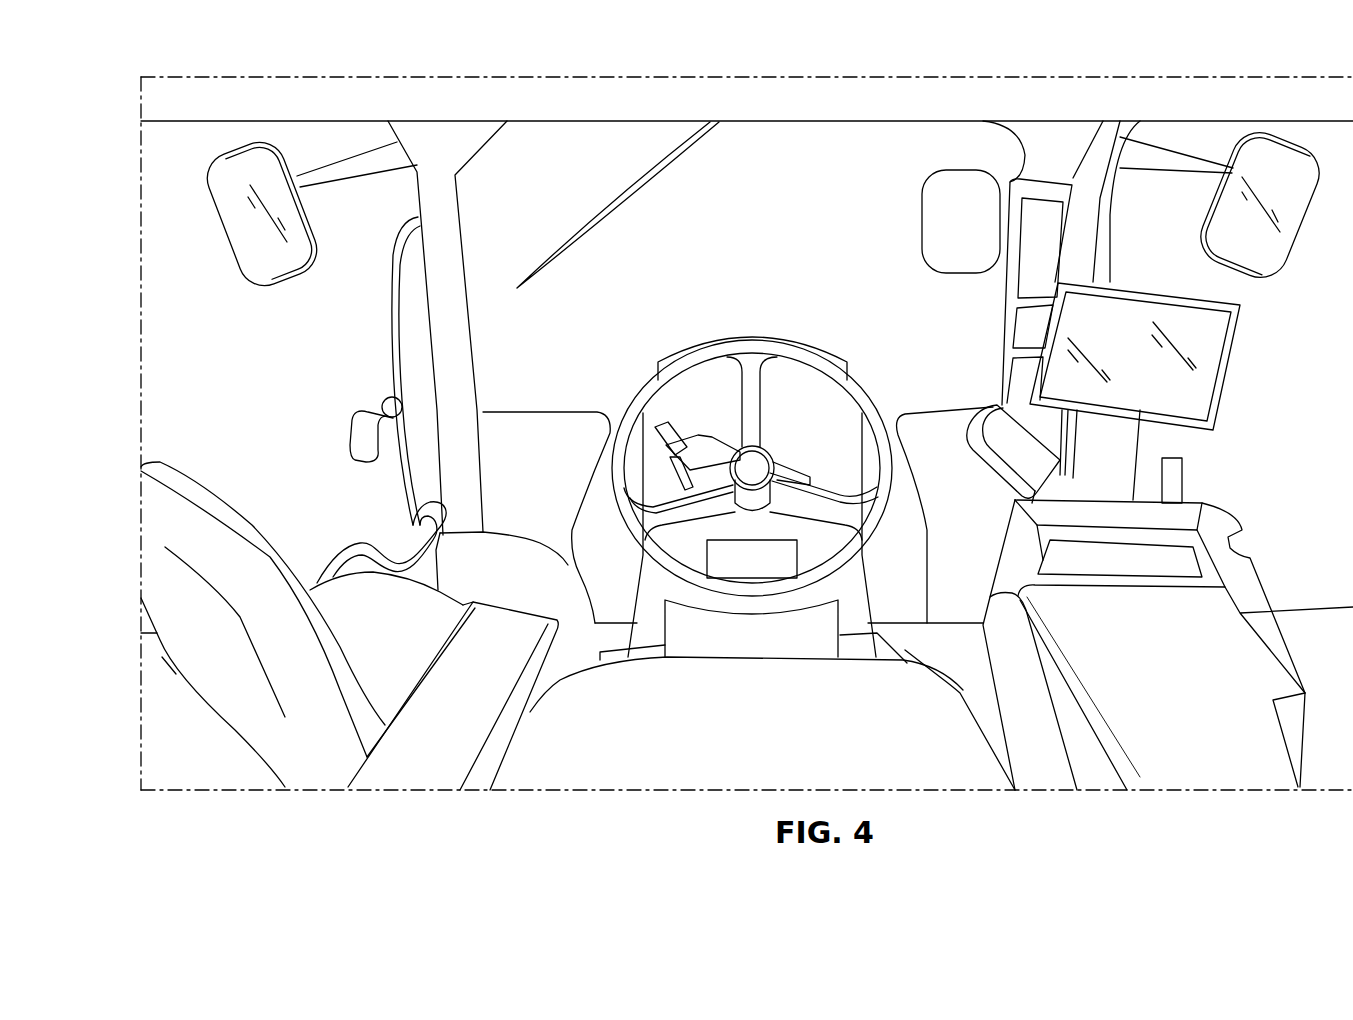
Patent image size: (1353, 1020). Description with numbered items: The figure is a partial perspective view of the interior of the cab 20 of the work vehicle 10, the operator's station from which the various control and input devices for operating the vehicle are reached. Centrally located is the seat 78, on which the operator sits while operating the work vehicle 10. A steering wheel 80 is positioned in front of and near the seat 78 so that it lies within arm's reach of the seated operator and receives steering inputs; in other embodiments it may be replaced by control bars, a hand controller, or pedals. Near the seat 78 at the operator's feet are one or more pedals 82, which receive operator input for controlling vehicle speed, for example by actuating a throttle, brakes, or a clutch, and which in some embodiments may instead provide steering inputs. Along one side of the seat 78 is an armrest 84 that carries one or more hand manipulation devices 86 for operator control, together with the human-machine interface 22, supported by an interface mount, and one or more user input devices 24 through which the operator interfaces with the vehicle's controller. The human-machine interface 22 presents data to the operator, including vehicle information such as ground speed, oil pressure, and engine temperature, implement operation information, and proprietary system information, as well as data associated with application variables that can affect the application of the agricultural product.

The work vehicle 10 is at (978, 48).
The cab 20 is at (113, 258).
The human-machine interface (HMI) 22 is at (1237, 420).
The user input devices 24 is at (1168, 565).
The seat 78 is at (638, 755).
The steering wheel 80 is at (638, 400).
The pedals 82 is at (908, 648).
The armrest 84 is at (1268, 545).
The hand manipulation devices 86 is at (997, 423).